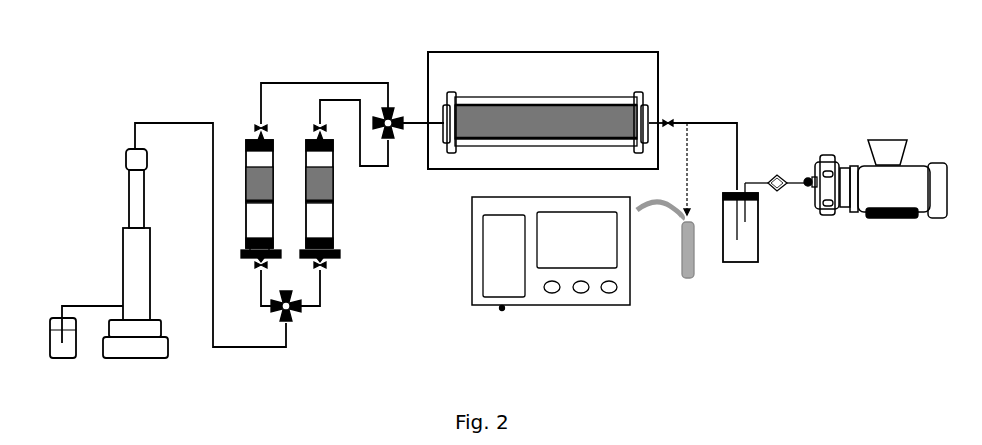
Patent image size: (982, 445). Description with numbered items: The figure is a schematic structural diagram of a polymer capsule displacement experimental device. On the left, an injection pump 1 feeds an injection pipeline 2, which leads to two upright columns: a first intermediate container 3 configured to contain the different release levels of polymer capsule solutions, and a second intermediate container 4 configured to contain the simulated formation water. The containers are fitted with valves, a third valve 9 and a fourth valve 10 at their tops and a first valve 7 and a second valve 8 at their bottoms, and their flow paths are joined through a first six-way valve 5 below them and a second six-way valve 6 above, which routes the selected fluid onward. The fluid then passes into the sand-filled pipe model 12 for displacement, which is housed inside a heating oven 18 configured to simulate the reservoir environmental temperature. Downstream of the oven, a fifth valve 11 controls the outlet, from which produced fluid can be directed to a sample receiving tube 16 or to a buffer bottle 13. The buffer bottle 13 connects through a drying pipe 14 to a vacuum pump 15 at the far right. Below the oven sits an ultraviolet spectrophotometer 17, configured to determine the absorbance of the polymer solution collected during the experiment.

The injection pump 1 is at (130, 263).
The injection pipeline 2 is at (180, 120).
The first intermediate container 3 is at (245, 148).
The second intermediate container 4 is at (335, 205).
The first six-way valve 5 is at (292, 312).
The second six-way valve 6 is at (392, 133).
The first valve 7 is at (258, 270).
The second valve 8 is at (325, 268).
The third valve 9 is at (266, 127).
The fourth valve 10 is at (325, 128).
The fifth valve 11 is at (670, 118).
The sand-filled pipe model 12 is at (518, 92).
The buffer bottle 13 is at (740, 188).
The drying pipe 14 is at (777, 188).
The vacuum pump 15 is at (886, 139).
The sample receiving tube 16 is at (697, 262).
The ultraviolet spectrophotometer 17 is at (548, 308).
The heating oven 18 is at (585, 58).